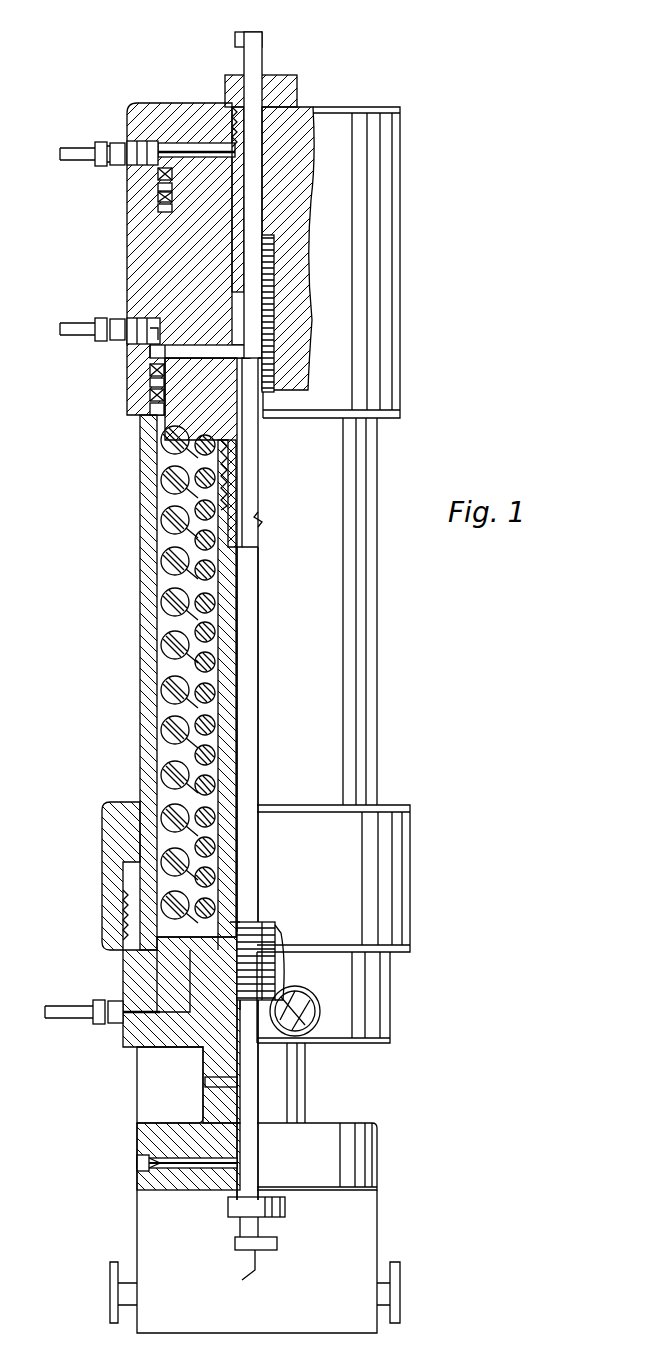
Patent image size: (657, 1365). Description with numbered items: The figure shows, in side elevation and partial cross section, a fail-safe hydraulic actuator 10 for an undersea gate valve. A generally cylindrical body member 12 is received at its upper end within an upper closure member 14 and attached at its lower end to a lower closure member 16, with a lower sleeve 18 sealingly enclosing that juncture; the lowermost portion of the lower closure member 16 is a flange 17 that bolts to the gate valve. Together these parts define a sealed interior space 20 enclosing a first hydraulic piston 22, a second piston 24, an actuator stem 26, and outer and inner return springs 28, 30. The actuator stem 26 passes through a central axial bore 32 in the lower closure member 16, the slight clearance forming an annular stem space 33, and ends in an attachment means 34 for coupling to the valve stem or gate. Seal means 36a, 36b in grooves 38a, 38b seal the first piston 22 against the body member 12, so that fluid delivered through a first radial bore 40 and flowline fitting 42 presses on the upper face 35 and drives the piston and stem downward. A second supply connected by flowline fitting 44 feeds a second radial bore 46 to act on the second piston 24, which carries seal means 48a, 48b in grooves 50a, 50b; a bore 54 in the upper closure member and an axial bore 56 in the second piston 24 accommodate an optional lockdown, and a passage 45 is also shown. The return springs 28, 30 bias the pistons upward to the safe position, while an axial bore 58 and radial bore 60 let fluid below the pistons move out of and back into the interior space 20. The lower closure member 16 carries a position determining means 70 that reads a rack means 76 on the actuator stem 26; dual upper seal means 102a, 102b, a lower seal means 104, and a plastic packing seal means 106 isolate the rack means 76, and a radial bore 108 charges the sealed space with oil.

The fail-safe hydraulic actuator 10 is at (54, 475).
The body member 12 is at (140, 505).
The upper closure member 14 is at (400, 224).
The lower closure member 16 is at (135, 1047).
The flange 17 is at (376, 1155).
The lower sleeve 18 is at (104, 802).
The interior space 20 is at (162, 560).
The first hydraulic piston 22 is at (233, 430).
The second piston 24 is at (150, 265).
The actuator stem 26 is at (250, 628).
The outer return spring 28 is at (165, 600).
The inner return spring 30 is at (165, 650).
The central axial bore 32 is at (293, 60).
The annular stem space 33 is at (240, 1005).
The attachment means 34 is at (235, 1244).
The upper face 35 is at (150, 350).
The annular seal means 36a is at (150, 383).
The annular seal means 36b is at (150, 395).
The upper circumferential groove 38a is at (150, 370).
The lower circumferential groove 38b is at (150, 410).
The first radial bore 40 is at (150, 318).
The flowline fitting 42 is at (62, 322).
The flowline fitting 44 is at (62, 148).
The passage 45 is at (192, 146).
The second radial bore 46 is at (155, 148).
The upper seal means 48a is at (158, 186).
The lower seal means 48b is at (158, 198).
The upper circumferential groove 50a is at (158, 172).
The lower circumferential groove 50b is at (158, 210).
The central axial bore 54 is at (300, 107).
The axial bore 56 is at (276, 312).
The axially extending bore 58 is at (163, 962).
The radially extending bore 60 is at (128, 998).
The position determining means 70 is at (322, 1000).
The rack means 76 is at (286, 937).
The upper annular seal means 102a is at (235, 900).
The upper annular seal means 102b is at (238, 917).
The lower annular seal means 104 is at (240, 1128).
The plastic packing seal means 106 is at (242, 1163).
The radial bore 108 is at (205, 1085).